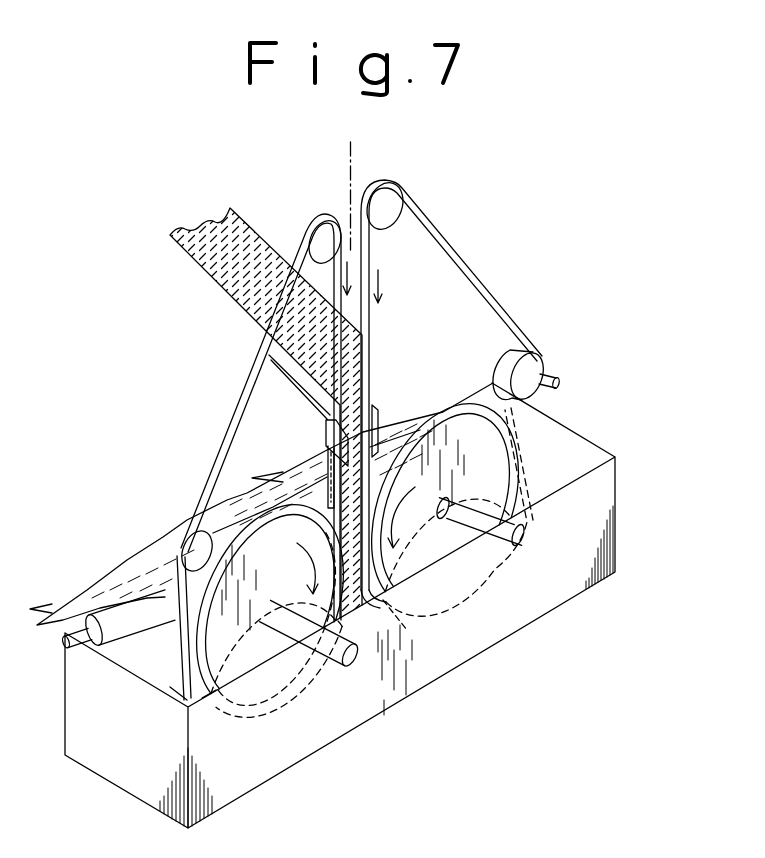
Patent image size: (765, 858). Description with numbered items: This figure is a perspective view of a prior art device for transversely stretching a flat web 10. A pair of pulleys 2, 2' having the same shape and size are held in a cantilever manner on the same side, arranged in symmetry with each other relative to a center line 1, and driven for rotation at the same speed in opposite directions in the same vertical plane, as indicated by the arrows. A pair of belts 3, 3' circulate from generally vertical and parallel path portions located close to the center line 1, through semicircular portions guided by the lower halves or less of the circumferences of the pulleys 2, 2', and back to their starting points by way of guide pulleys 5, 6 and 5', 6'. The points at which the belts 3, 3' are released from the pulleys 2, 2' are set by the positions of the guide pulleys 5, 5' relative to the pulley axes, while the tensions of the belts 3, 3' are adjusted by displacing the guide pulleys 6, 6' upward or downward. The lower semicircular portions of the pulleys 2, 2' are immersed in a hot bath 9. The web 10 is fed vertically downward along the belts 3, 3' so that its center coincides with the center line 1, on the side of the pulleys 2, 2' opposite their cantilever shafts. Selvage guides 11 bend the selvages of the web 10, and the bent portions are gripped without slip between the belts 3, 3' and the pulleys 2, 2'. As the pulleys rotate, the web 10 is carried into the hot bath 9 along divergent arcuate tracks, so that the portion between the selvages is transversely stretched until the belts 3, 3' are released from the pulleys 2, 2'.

The center line 1 is at (353, 160).
The pulley 2 is at (250, 569).
The pulley 2' is at (506, 484).
The belt 3 is at (240, 465).
The belt 3' is at (451, 405).
The guide pulley 5 is at (178, 522).
The guide pulley 5' is at (546, 355).
The guide pulley 6 is at (303, 208).
The guide pulley 6' is at (417, 193).
The hot bath 9 is at (367, 724).
The web 10 is at (200, 262).
The selvage guide 11 is at (277, 374).